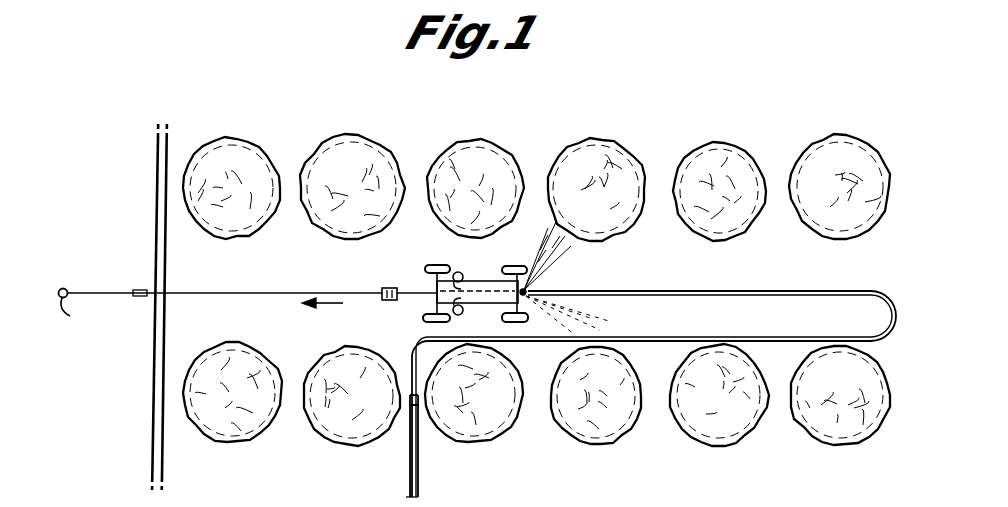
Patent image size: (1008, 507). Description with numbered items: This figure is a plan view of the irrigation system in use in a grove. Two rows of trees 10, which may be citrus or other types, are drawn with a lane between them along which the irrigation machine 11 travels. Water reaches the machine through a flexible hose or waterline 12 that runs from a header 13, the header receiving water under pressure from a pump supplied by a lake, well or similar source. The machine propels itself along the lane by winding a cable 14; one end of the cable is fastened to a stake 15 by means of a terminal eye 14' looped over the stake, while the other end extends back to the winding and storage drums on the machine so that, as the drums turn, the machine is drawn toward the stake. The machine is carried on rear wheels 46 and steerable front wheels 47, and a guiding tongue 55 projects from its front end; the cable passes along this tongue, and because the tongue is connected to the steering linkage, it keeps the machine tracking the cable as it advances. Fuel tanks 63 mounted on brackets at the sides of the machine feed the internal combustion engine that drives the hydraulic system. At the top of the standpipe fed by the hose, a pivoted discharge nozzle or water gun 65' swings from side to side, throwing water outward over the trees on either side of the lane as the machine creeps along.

The trees 10 is at (323, 170).
The irrigation machine 11 is at (483, 280).
The flexible hose or waterline 12 is at (661, 338).
The header 13 is at (411, 471).
The cable 14 is at (224, 281).
The terminal eye 14' is at (77, 313).
The stake 15 is at (90, 277).
The wheels 46 is at (525, 267).
The wheels 47 is at (424, 318).
The guiding tongue 55 is at (407, 290).
The fuel tanks 63 is at (462, 313).
The discharge nozzle or water gun 65' is at (566, 278).